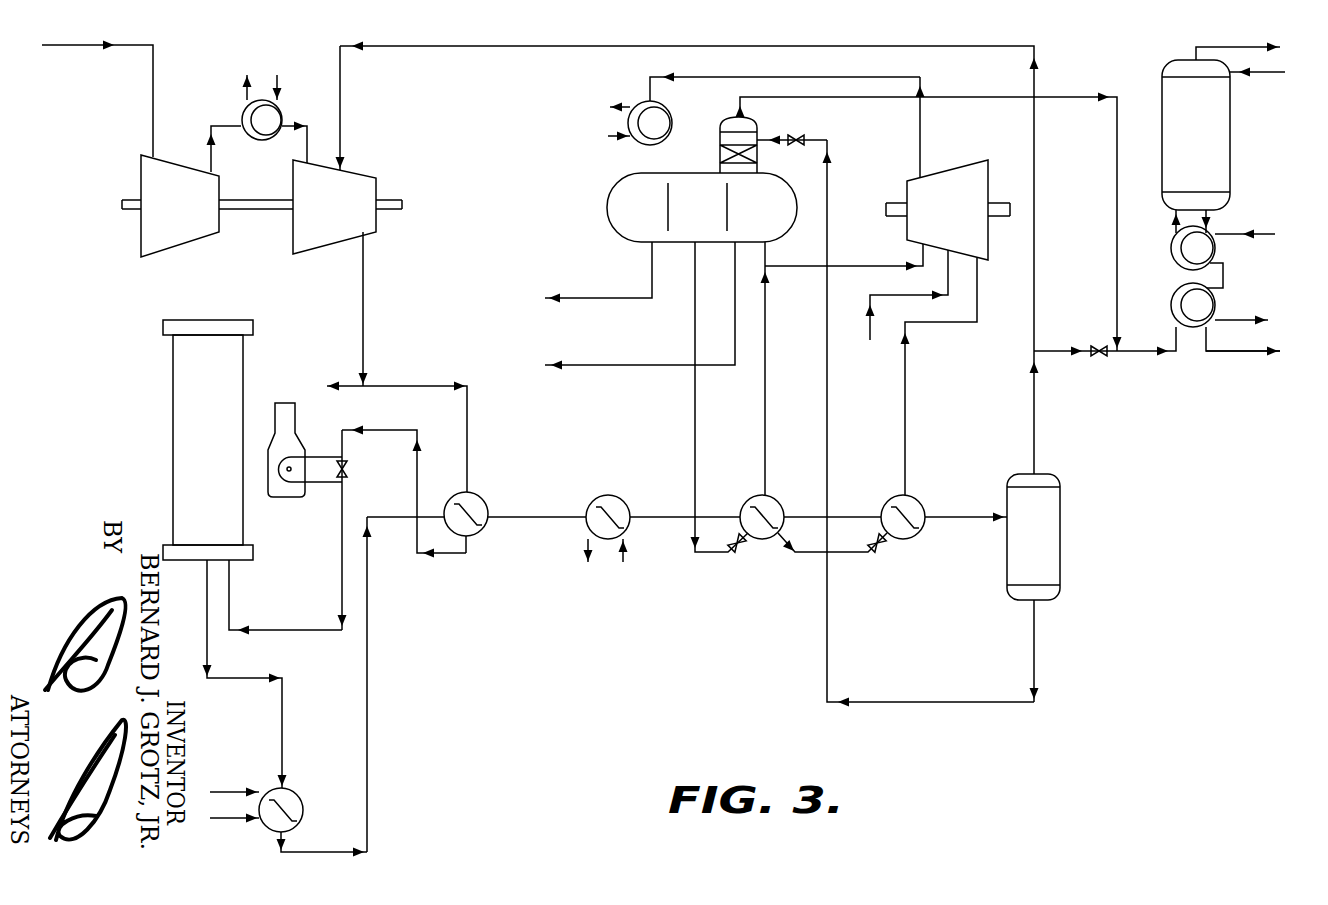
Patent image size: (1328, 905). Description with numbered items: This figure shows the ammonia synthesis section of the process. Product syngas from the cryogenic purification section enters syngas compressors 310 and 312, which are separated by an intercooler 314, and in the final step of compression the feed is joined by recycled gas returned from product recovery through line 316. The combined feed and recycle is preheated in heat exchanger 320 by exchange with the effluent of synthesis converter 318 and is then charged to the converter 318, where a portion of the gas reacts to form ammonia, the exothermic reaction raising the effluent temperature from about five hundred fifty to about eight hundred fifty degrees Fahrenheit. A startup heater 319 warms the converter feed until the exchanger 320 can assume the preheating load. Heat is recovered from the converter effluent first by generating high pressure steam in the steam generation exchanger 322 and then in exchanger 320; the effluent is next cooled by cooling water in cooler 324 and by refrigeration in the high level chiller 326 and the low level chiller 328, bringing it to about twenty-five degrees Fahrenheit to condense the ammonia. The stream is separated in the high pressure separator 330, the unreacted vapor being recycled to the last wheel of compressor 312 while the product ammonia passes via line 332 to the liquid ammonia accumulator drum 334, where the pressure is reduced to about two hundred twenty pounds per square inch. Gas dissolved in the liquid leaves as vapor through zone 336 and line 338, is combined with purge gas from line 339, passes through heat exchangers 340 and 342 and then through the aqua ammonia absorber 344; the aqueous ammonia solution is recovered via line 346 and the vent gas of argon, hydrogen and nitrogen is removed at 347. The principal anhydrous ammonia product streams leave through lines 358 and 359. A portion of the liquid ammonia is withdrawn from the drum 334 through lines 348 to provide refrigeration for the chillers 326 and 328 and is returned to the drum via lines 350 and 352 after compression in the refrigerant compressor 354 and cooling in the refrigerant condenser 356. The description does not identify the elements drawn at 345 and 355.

The syngas compressor 310 is at (148, 177).
The syngas compressor 312 is at (358, 184).
The intercooler 314 is at (241, 116).
The recycle gas line 316 is at (385, 46).
The synthesis converter 318 is at (187, 452).
The startup heater 319 is at (285, 410).
The heat exchanger 320 is at (488, 502).
The steam generation exchanger 322 is at (295, 790).
The cooler 324 is at (612, 541).
The high level chiller 326 is at (765, 541).
The low level chiller 328 is at (933, 487).
The high pressure separator 330 is at (1046, 507).
The line 332 is at (826, 440).
The liquid ammonia accumulator drum 334 is at (702, 207).
The zone 336 is at (723, 128).
The line 338 is at (1091, 79).
The purge line 339 is at (1074, 333).
The heat exchanger 340 is at (1214, 303).
The heat exchanger 342 is at (1215, 252).
The aqua ammonia absorber 344 is at (1218, 166).
The solvent inlet line 345 is at (1261, 76).
The line 346 is at (1262, 354).
The vent gas outlet 347 is at (1205, 47).
The lines 348 is at (694, 450).
The line 350 is at (766, 342).
The line 352 is at (906, 391).
The refrigerant compressor 354 is at (980, 146).
The line 355 is at (937, 294).
The refrigerant condenser 356 is at (644, 105).
The line 358 is at (650, 300).
The line 359 is at (612, 367).